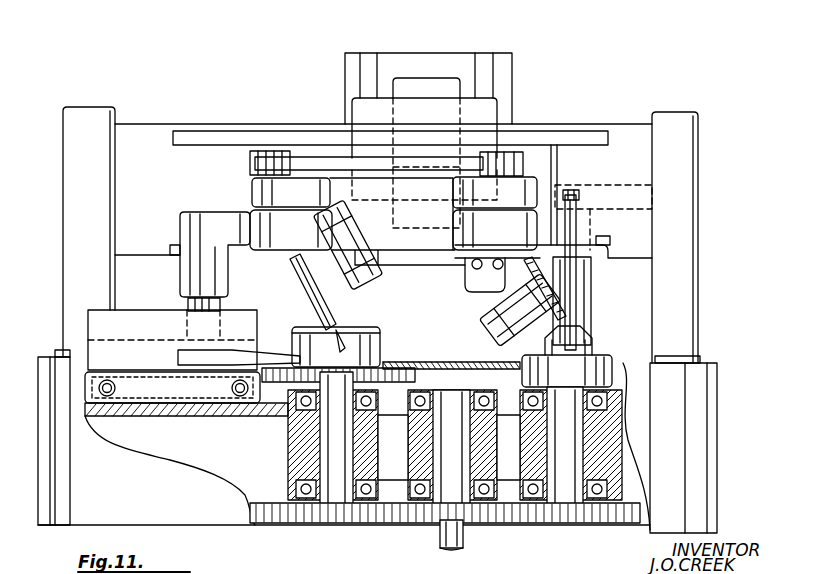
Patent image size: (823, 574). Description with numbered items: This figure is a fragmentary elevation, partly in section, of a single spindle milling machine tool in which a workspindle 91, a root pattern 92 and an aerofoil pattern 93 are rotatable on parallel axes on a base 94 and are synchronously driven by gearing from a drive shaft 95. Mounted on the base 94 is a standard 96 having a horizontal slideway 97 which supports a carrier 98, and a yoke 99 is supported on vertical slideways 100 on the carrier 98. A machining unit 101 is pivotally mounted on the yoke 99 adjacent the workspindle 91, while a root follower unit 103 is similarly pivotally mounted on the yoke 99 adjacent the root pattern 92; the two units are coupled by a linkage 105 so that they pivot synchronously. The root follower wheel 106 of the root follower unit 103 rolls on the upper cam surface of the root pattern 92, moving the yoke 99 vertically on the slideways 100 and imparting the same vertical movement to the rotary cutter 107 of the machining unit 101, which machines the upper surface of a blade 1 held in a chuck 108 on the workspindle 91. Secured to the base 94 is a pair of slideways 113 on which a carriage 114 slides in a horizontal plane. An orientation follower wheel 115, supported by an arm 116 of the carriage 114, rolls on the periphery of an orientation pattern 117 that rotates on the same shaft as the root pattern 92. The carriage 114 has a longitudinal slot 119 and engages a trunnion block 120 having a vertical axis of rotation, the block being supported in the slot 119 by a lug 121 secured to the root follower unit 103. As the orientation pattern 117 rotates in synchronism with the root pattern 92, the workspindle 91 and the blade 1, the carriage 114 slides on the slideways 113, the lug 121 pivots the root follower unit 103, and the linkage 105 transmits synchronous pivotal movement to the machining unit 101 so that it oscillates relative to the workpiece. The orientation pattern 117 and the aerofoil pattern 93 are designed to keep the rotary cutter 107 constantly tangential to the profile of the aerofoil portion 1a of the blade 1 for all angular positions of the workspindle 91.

The blade 1 is at (590, 305).
The aerofoil portion 1a is at (570, 192).
The workspindle 91 is at (600, 376).
The root pattern 92 is at (383, 344).
The aerofoil pattern 93 is at (604, 212).
The base 94 is at (198, 462).
The drive shaft 95 is at (446, 542).
The standard 96 is at (688, 284).
The horizontal slideway 97 is at (553, 134).
The carrier 98 is at (452, 62).
The yoke 99 is at (250, 192).
The vertical slideways 100 is at (369, 66).
The machining unit 101 is at (478, 338).
The root follower unit 103 is at (372, 280).
The linkage 105 is at (367, 156).
The root follower wheel 106 is at (292, 266).
The rotary cutter 107 is at (538, 268).
The chuck 108 is at (590, 337).
The slideways 113 is at (116, 386).
The carriage 114 is at (96, 346).
The orientation follower wheel 115 is at (336, 348).
The arm 116 is at (266, 347).
The orientation pattern 117 is at (506, 328).
The longitudinal slot 119 is at (140, 310).
The trunnion block 120 is at (221, 301).
The lug 121 is at (204, 212).